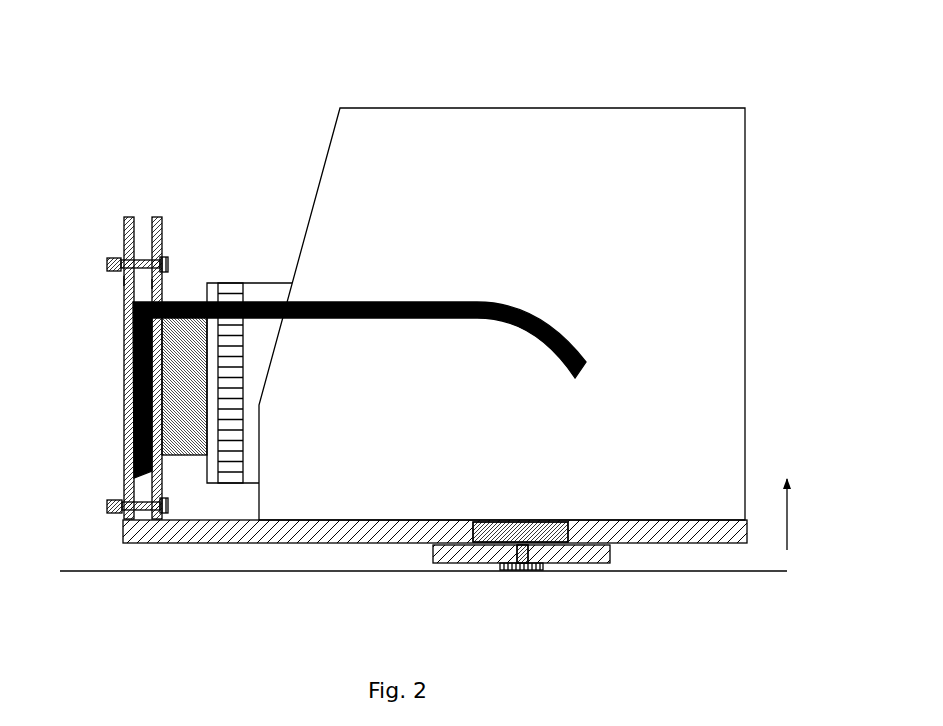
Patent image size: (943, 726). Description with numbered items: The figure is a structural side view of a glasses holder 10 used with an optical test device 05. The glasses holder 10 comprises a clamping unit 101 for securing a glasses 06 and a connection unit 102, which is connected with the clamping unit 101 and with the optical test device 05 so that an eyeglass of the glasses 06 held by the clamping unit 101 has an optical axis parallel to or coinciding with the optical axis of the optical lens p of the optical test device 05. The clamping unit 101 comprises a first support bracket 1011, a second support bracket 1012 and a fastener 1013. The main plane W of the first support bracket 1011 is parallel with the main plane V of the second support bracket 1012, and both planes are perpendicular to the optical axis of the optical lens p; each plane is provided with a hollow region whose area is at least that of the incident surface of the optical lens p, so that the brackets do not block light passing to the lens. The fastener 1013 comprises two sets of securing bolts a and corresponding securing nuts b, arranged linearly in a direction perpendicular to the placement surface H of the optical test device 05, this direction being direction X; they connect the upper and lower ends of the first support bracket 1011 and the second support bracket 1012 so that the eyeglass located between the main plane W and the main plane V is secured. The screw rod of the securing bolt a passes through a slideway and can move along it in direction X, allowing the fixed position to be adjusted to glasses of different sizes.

The optical test device 05 is at (532, 112).
The glasses 06 is at (183, 300).
The glasses holder 10 is at (180, 553).
The clamping unit 101 is at (150, 288).
The first support bracket 1011 is at (125, 213).
The second support bracket 1012 is at (162, 213).
The fastener 1013 is at (110, 262).
The connection unit 102 is at (450, 567).
The optical lens p is at (170, 432).
The securing bolt a is at (169, 507).
The securing nut b is at (118, 514).
The main plane of the first support bracket W is at (121, 281).
The main plane of the second support bracket V is at (151, 284).
The placement surface of the optical test device H is at (423, 562).
The direction X is at (796, 514).